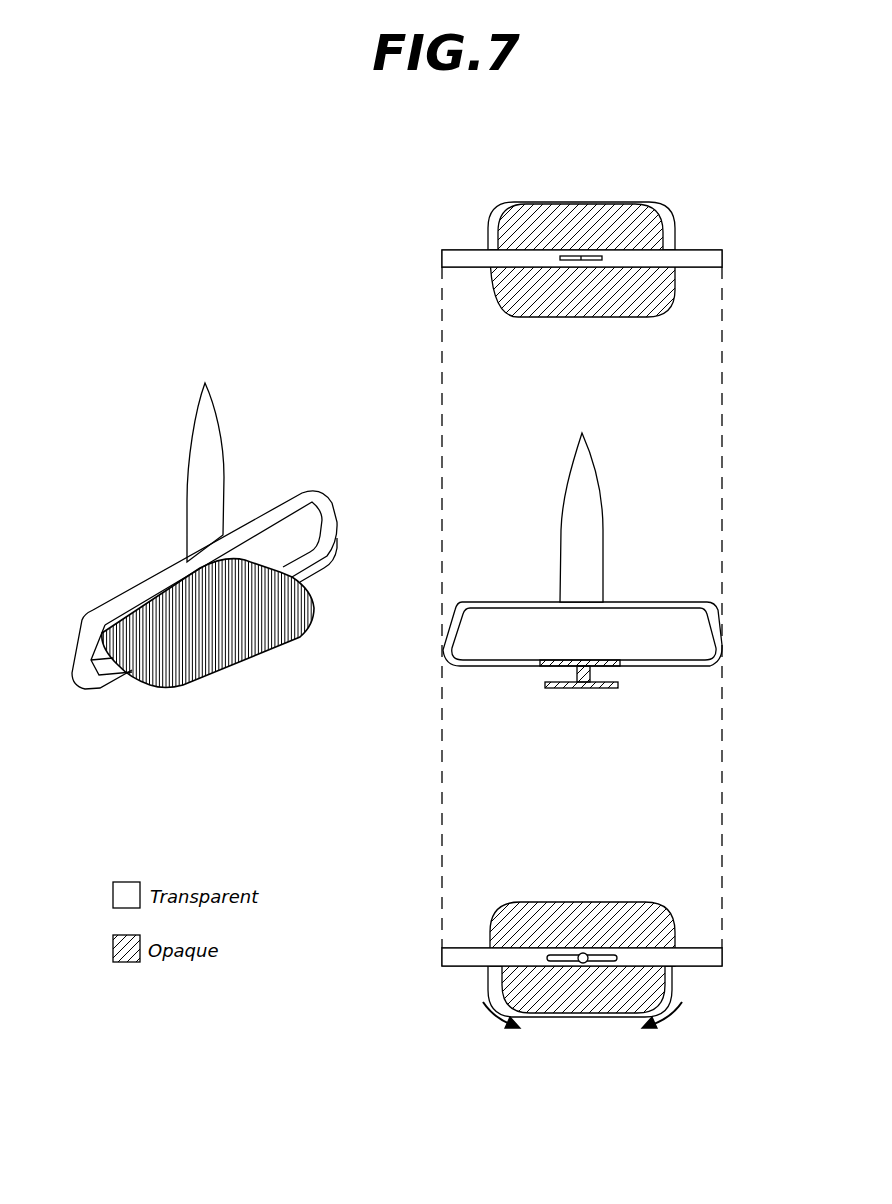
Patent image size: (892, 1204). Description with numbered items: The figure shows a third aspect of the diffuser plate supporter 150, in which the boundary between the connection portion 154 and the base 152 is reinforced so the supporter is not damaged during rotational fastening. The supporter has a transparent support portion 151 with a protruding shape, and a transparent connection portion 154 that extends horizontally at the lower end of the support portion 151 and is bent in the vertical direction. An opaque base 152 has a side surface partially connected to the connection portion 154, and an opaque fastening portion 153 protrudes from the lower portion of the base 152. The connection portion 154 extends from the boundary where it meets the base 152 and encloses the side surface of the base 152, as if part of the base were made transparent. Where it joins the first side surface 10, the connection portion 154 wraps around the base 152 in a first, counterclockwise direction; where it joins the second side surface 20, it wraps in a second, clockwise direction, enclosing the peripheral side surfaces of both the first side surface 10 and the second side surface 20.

The diffuser plate supporter 150 is at (137, 208).
The support portion 151 is at (218, 420).
The base 152 is at (226, 653).
The fastening portion 153 is at (603, 688).
The connection portion 154 is at (238, 555).
The first side surface 10 is at (486, 967).
The second side surface 20 is at (673, 970).